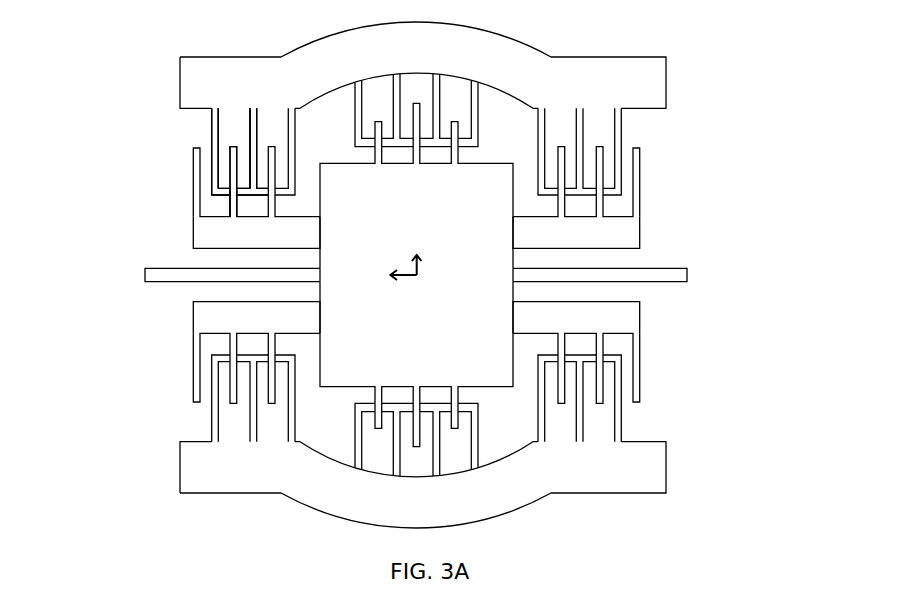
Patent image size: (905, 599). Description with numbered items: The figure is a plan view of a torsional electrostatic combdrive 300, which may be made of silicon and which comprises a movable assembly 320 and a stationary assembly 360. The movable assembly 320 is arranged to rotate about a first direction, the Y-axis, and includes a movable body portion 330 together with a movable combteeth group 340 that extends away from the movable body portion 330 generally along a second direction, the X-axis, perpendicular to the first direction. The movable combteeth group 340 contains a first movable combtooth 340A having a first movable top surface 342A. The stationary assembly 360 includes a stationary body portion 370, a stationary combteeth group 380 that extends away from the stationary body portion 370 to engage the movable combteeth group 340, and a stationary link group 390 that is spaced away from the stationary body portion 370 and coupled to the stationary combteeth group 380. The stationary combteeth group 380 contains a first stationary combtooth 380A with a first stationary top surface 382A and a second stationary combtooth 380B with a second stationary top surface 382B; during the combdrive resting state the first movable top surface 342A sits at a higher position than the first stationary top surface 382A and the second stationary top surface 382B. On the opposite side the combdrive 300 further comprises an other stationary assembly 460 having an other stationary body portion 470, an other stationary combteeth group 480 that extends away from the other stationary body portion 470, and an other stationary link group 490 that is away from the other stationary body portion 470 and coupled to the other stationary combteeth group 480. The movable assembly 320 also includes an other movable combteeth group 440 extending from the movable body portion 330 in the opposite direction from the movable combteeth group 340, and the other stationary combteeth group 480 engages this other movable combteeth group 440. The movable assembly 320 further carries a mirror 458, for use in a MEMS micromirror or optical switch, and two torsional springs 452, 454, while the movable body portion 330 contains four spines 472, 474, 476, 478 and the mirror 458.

The torsional electrostatic combdrive 300 is at (757, 83).
The movable assembly 320 is at (272, 274).
The movable body portion 330 is at (660, 231).
The movable combteeth group 340 is at (210, 134).
The first movable combtooth 340A is at (232, 135).
The first movable top surface 342A is at (235, 198).
The stationary assembly 360 is at (98, 80).
The stationary body portion 370 is at (437, 64).
The stationary combteeth group 380 is at (226, 103).
The first stationary combtooth 380A is at (205, 132).
The second stationary combtooth 380B is at (245, 128).
The first stationary top surface 382A is at (214, 143).
The second stationary top surface 382B is at (251, 134).
The stationary link group 390 is at (608, 178).
The other movable combteeth group 440 is at (170, 364).
The torsional spring 452 is at (683, 270).
The torsional spring 454 is at (150, 271).
The mirror 458 is at (434, 327).
The other stationary assembly 460 is at (98, 428).
The other stationary body portion 470 is at (437, 517).
The spine 472 is at (602, 244).
The spine 474 is at (286, 244).
The spine 476 is at (602, 327).
The spine 478 is at (286, 333).
The other stationary combteeth group 480 is at (196, 422).
The other stationary link group 490 is at (607, 372).